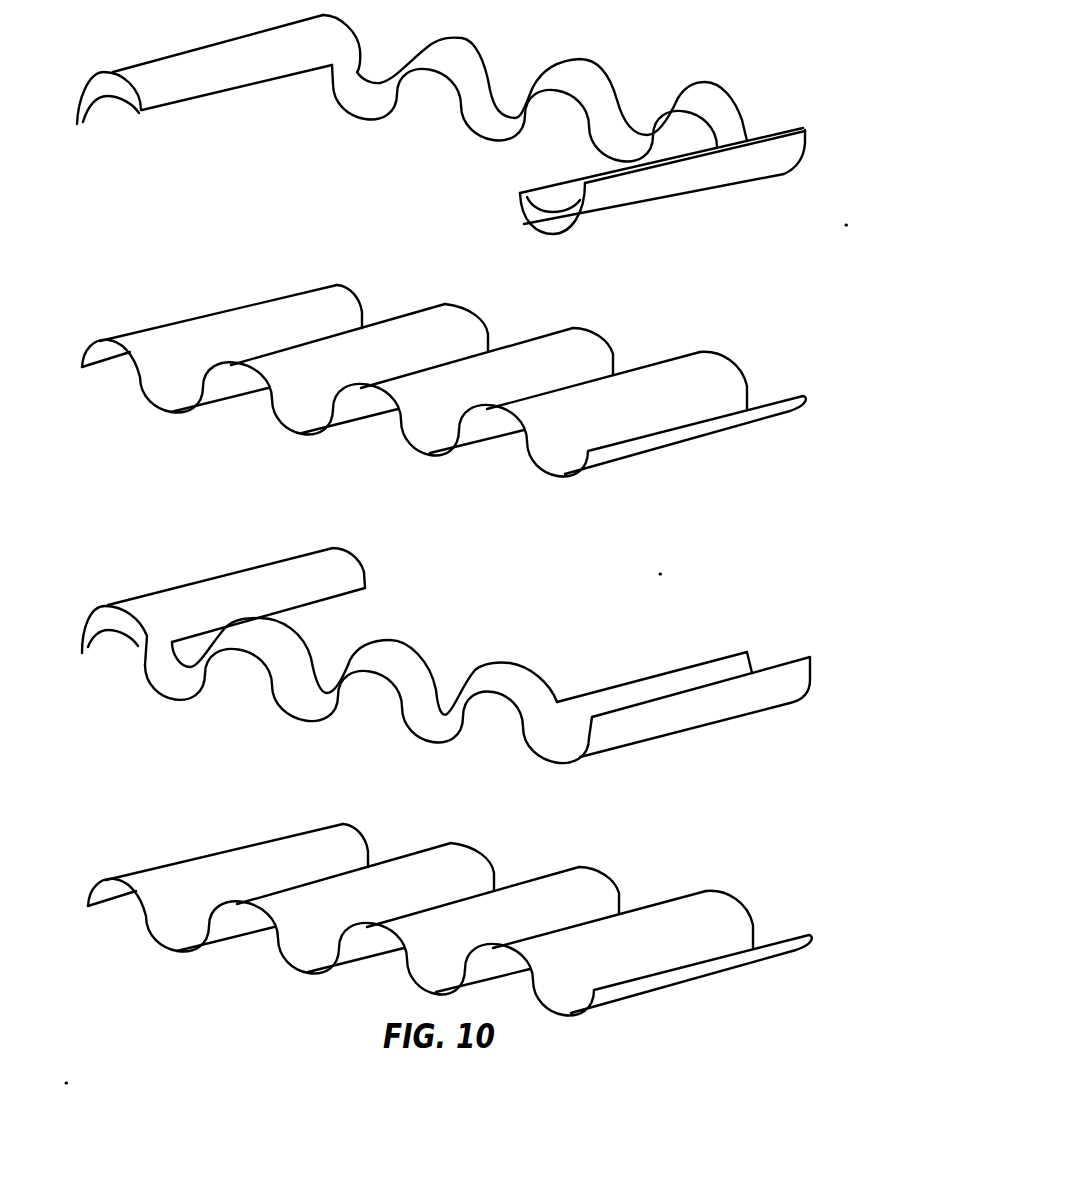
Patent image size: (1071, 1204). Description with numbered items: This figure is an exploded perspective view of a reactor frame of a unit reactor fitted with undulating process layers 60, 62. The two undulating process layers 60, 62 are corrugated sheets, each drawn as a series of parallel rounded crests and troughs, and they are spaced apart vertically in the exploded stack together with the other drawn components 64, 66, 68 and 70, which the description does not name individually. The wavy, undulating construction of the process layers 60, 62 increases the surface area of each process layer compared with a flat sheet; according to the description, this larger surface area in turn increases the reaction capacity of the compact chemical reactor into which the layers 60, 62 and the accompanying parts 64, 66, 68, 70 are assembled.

The undulating process layer 60 is at (695, 432).
The undulating process layer 62 is at (450, 919).
The corrugated web section 64 is at (436, 92).
The corrugated web section 66 is at (445, 682).
The planar sheet section 68 is at (697, 717).
The channel section 70 is at (693, 183).